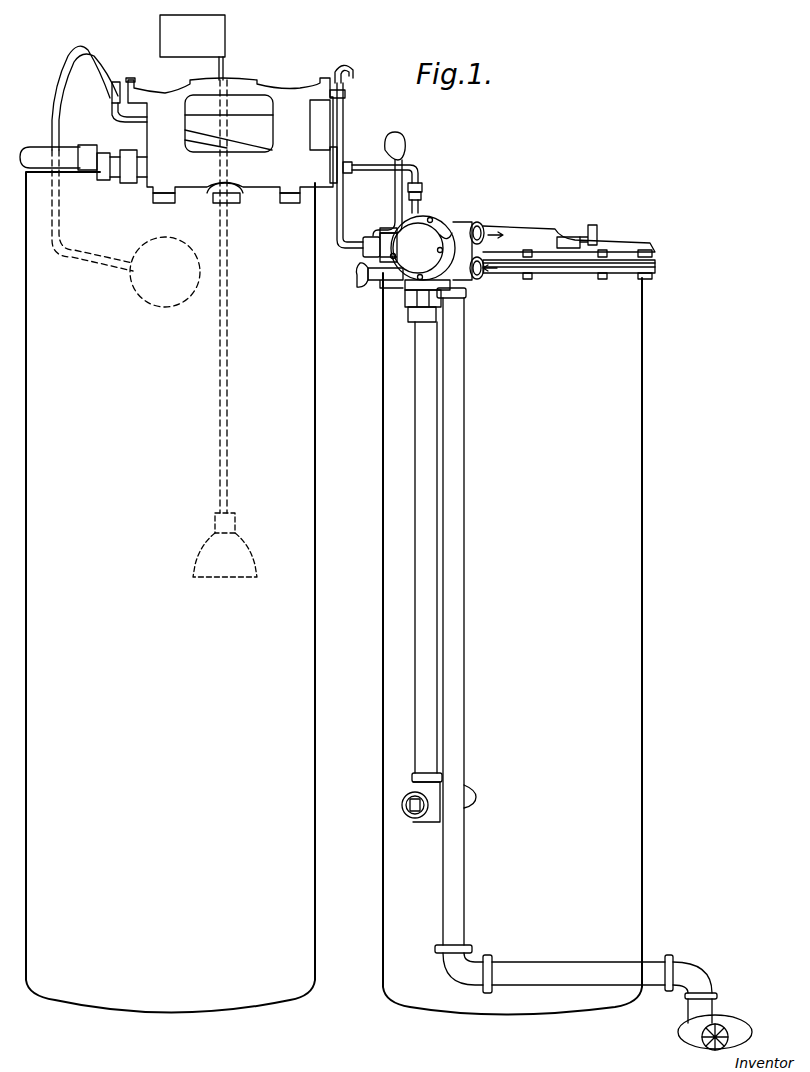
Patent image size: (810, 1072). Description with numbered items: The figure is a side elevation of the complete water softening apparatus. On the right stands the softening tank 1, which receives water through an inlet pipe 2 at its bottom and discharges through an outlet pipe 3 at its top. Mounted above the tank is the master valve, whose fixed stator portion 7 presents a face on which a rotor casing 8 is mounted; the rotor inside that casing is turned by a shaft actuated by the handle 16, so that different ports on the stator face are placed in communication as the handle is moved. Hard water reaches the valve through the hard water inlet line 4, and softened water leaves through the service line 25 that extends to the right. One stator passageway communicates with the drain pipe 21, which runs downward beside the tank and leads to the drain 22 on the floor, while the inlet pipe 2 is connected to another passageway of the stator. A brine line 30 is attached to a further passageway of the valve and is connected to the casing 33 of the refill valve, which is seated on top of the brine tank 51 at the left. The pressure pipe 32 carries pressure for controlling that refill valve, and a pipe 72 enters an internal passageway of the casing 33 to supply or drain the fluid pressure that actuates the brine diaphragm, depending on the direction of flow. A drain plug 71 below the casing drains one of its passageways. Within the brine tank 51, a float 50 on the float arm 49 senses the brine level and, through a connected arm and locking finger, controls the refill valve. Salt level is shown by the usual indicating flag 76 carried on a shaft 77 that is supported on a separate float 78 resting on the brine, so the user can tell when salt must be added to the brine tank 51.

The softening tank 1 is at (640, 432).
The inlet pipe 2 is at (418, 692).
The outlet pipe 3 is at (477, 220).
The hard water inlet line 4 is at (481, 278).
The stator portion of the valve 7 is at (432, 220).
The rotor casing 8 is at (418, 218).
The handle 16 is at (377, 242).
The drain pipe 21 is at (465, 552).
The drain 22 is at (740, 1020).
The service line 25 is at (482, 226).
The brine line 30 is at (420, 168).
The pressure pipe 32 is at (344, 125).
The casing 33 is at (290, 115).
The float arm 49 is at (54, 108).
The float 50 is at (132, 300).
The brine tank 51 is at (305, 596).
The drain plug 71 is at (228, 205).
The pipe 72 is at (118, 118).
The indicating flag 76 is at (160, 33).
The shaft 77 is at (226, 72).
The float 78 is at (200, 556).